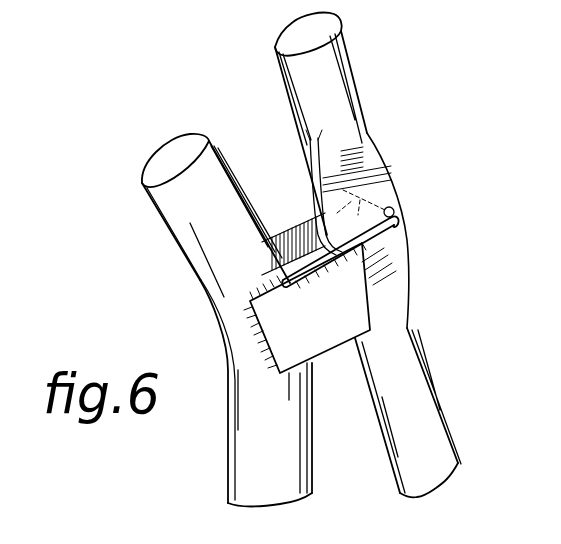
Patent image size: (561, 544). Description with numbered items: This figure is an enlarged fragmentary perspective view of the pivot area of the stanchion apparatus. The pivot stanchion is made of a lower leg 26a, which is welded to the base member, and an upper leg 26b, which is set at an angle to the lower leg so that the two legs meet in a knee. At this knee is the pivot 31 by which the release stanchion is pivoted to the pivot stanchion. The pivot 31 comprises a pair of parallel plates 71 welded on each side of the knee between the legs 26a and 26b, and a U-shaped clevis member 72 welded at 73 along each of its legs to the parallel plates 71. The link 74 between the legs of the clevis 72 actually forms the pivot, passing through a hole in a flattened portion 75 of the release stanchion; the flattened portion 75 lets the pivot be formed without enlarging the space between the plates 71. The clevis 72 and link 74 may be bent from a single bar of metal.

The lower leg of pivot stanchion 26a is at (243, 442).
The upper leg of pivot stanchion 26b is at (204, 250).
The pivot 31 is at (406, 178).
The parallel plates 71 is at (292, 255).
The U-shaped clevis member 72 is at (357, 228).
The welds along clevis legs 73 is at (330, 270).
The link 74 is at (392, 212).
The flattened portion 75 is at (370, 172).